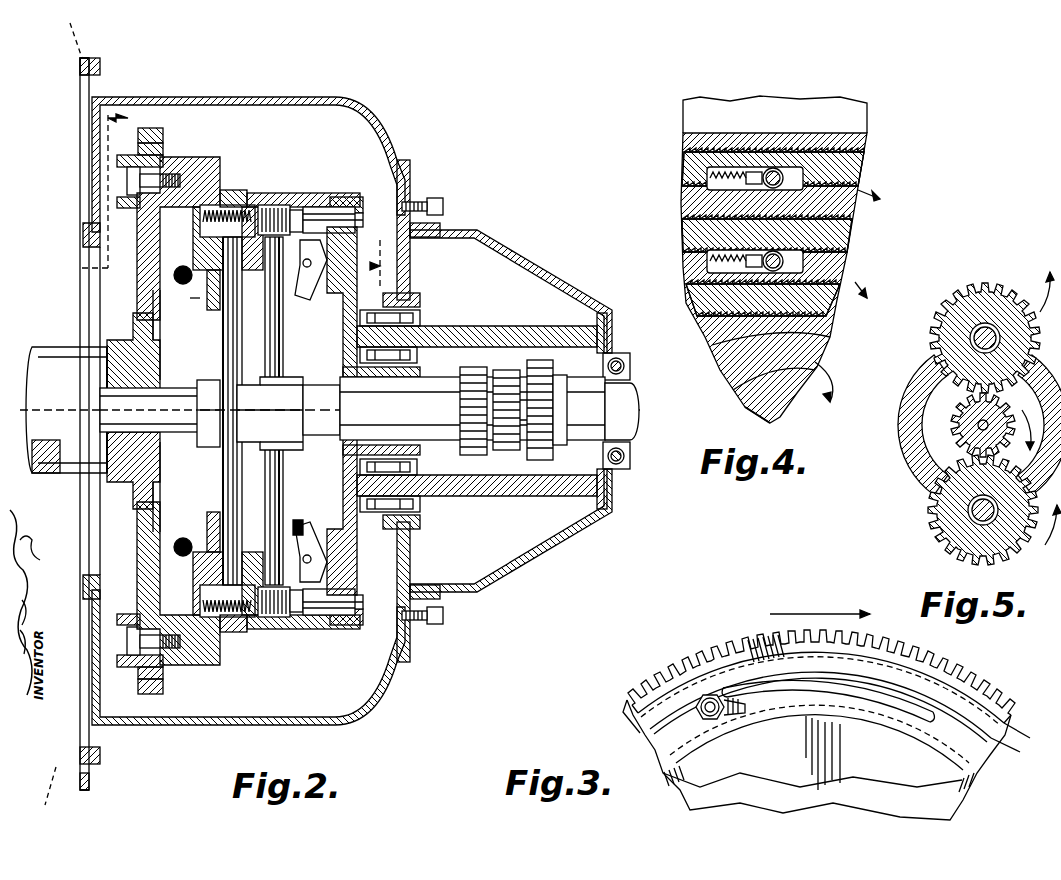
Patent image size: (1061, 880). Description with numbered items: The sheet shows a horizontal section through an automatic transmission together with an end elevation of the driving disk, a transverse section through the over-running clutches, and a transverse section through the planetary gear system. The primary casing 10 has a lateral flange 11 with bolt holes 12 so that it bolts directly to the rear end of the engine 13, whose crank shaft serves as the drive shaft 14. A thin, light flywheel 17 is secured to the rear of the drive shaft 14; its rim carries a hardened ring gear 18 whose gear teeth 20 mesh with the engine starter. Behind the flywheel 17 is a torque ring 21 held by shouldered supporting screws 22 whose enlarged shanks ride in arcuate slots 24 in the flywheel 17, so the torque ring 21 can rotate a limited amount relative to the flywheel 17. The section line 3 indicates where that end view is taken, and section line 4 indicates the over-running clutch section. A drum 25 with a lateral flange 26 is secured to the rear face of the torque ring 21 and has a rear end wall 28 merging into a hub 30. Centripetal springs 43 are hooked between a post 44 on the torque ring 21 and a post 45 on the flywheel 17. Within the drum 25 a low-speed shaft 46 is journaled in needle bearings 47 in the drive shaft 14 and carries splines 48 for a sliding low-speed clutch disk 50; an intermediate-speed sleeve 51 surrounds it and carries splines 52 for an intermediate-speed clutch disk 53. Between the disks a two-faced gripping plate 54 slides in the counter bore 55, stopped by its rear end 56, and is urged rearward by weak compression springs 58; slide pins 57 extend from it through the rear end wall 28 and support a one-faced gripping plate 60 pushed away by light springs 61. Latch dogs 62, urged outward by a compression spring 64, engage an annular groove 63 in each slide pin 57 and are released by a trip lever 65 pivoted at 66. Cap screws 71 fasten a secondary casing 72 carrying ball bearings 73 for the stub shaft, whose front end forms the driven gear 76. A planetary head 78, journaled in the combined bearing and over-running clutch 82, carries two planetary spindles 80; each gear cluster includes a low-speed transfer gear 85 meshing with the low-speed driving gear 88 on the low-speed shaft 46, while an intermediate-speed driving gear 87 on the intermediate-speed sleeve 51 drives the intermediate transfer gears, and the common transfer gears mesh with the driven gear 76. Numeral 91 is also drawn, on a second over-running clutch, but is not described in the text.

In FIG. 2, the section line 3- 3 is at (56, 254).
In FIG. 2, the section line 4- 4 is at (381, 326).
In FIG. 2, the primary casing 10 is at (270, 97).
In FIG. 4, the primary casing 10 is at (770, 110).
In FIG. 2, the lateral flange 11 is at (92, 60).
In FIG. 2, the bolt holes 12 is at (94, 70).
In FIG. 2, the engine 13 is at (82, 36).
In FIG. 2, the drive shaft 14 is at (52, 347).
In FIG. 2, the flywheel 17 is at (135, 320).
In FIG. 3, the flywheel 17 is at (1005, 748).
In FIG. 2, the ring gear 18 is at (138, 146).
In FIG. 3, the ring gear 18 is at (846, 712).
In FIG. 2, the gear teeth 20 is at (150, 130).
In FIG. 3, the gear teeth 20 is at (975, 690).
In FIG. 2, the torque ring 21 is at (215, 157).
In FIG. 3, the torque ring 21 is at (640, 733).
In FIG. 2, the supporting screws 22 is at (127, 184).
In FIG. 3, the supporting screws 22 is at (718, 717).
In FIG. 3, the arcuate slot 24 is at (866, 700).
In FIG. 2, the drum 25 is at (318, 200).
In FIG. 2, the lateral flange 26 is at (228, 190).
In FIG. 2, the rear end wall 28 is at (358, 560).
In FIG. 2, the hub 30 is at (340, 415).
In FIG. 2, the centripetal springs 43 is at (180, 266).
In FIG. 2, the post 44 is at (586, 386).
In FIG. 2, the post 45 is at (188, 302).
In FIG. 2, the low-speed shaft 46 is at (100, 402).
In FIG. 4, the low-speed shaft 46 is at (805, 402).
In FIG. 5, the low-speed shaft 46 is at (958, 425).
In FIG. 2, the needle bearings 47 is at (107, 372).
In FIG. 2, the splines 48 is at (197, 400).
In FIG. 2, the low-speed clutch disk 50 is at (223, 312).
In FIG. 2, the intermediate-speed sleeve 51 is at (430, 385).
In FIG. 4, the intermediate-speed sleeve 51 is at (830, 356).
In FIG. 2, the splines 52 is at (298, 377).
In FIG. 2, the intermediate-speed clutch disk 53 is at (283, 330).
In FIG. 2, the two-faced gripping plate 54 is at (239, 411).
In FIG. 2, the counter bore 55 is at (236, 190).
In FIG. 2, the rear end of counter bore 56 is at (252, 620).
In FIG. 2, the slide pins 57 is at (363, 222).
In FIG. 2, the low-speed-clutch-disengaging compression springs 58 is at (203, 224).
In FIG. 2, the one-faced gripping plate 60 is at (283, 344).
In FIG. 2, the intermediate-speed-clutch-disengaging compression springs 61 is at (276, 205).
In FIG. 2, the latch dogs 62 is at (296, 615).
In FIG. 2, the annular groove 63 is at (305, 207).
In FIG. 2, the compression spring 64 is at (312, 300).
In FIG. 2, the trip lever 65 is at (360, 578).
In FIG. 2, the pivot 66 is at (303, 532).
In FIG. 2, the cap screws 71 is at (443, 208).
In FIG. 2, the secondary casing 72 is at (550, 272).
In FIG. 2, the ball bearings 73 is at (630, 368).
In FIG. 2, the driven gear 76 is at (540, 460).
In FIG. 2, the planetary head 78 is at (505, 327).
In FIG. 4, the planetary head 78 is at (858, 238).
In FIG. 5, the planetary head 78 is at (900, 434).
In FIG. 5, the planetary spindles 80 is at (975, 326).
In FIG. 2, the combined bearing and over-running clutch 82 is at (420, 320).
In FIG. 4, the combined bearing and over-running clutch 82 is at (803, 178).
In FIG. 2, the low-speed transfer gear 85 is at (514, 450).
In FIG. 5, the low-speed transfer gear 85 is at (985, 283).
In FIG. 2, the intermediate-speed driving gear 87 is at (474, 455).
In FIG. 2, the low-speed driving gear 88 is at (504, 450).
In FIG. 5, the low-speed driving gear 88 is at (958, 412).
In FIG. 2, the roller bearing 91 is at (417, 356).
In FIG. 4, the roller bearing 91 is at (803, 261).